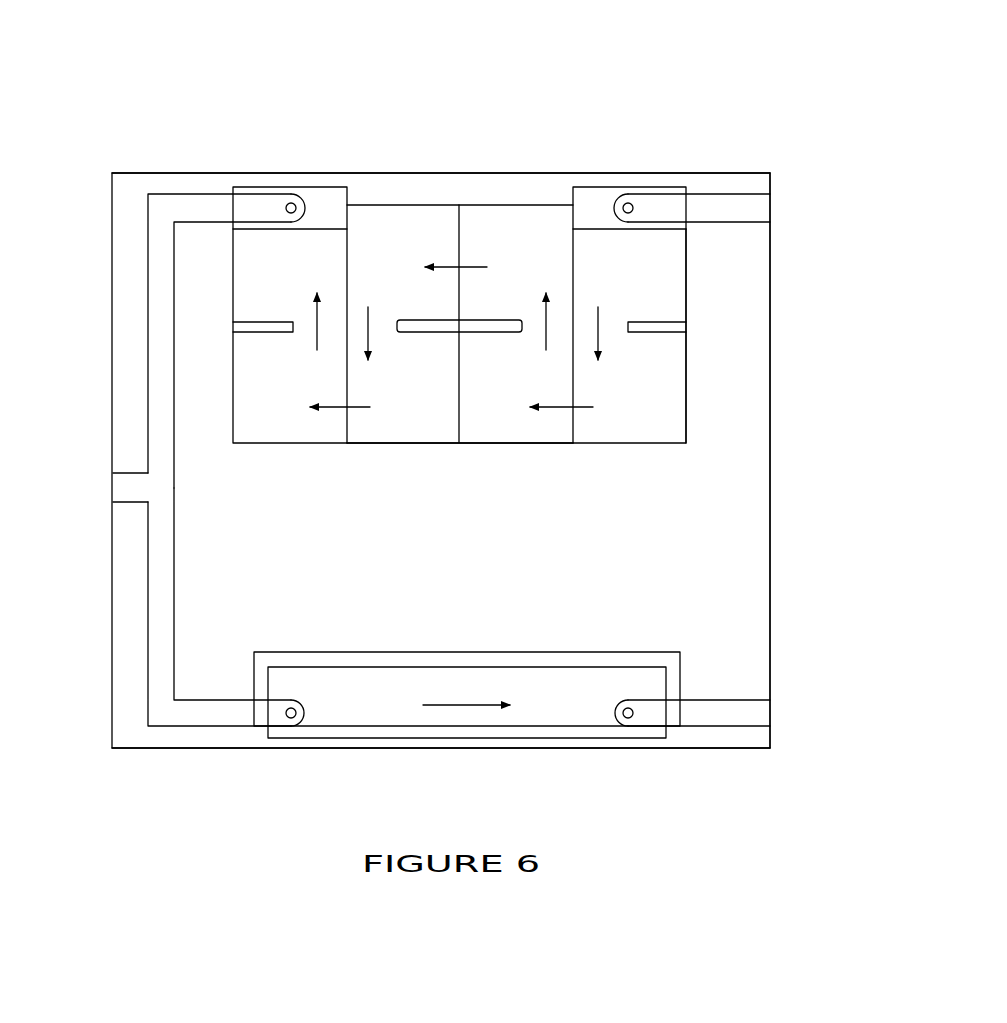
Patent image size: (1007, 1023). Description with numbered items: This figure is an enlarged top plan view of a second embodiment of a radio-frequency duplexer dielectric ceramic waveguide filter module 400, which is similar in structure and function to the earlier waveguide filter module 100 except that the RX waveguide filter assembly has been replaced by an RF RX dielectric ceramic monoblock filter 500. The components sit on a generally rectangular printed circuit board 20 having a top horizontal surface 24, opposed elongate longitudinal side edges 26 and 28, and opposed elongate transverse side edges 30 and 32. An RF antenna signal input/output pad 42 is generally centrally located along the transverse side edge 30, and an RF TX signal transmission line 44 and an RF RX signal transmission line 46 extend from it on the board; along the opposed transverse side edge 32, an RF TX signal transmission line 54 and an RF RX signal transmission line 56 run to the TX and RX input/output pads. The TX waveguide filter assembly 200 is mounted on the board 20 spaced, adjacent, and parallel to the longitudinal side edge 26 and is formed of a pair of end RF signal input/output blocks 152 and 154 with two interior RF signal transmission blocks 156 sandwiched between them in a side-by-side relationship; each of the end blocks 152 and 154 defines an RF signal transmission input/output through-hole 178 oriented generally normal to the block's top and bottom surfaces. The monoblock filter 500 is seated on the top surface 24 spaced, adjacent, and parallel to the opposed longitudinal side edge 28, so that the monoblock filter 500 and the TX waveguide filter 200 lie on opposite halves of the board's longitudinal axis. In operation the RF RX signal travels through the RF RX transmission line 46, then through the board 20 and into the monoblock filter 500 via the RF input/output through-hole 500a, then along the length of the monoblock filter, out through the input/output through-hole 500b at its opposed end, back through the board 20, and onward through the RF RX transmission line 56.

The printed circuit board 20 is at (345, 172).
The top horizontal surface 24 is at (466, 545).
The longitudinal side edge 26 is at (441, 173).
The longitudinal side edge 28 is at (303, 750).
The transverse side edge 30 is at (110, 343).
The transverse side edge 32 is at (770, 410).
The RF antenna signal input/output pad 42 is at (120, 488).
The RF TX signal transmission line 44 is at (160, 255).
The RF RX signal transmission line 46 is at (158, 607).
The RF TX signal transmission line 54 is at (710, 210).
The RF RX signal transmission line 56 is at (705, 717).
The waveguide filter module 100 is at (500, 186).
The RF signal input/output block 152 is at (293, 186).
The RF signal input/output block 154 is at (627, 185).
The RF signal transmission block 156 is at (414, 204).
The RF signal transmission input/output through-hole 178 is at (288, 204).
The TX waveguide filter assembly 200 is at (710, 296).
The RF duplexer dielectric ceramic waveguide filter module 400 is at (480, 95).
The RX dielectric ceramic monoblock filter 500 is at (598, 747).
The RF input/output through-hole 500a is at (298, 715).
The input/output through-hole 500b is at (622, 715).